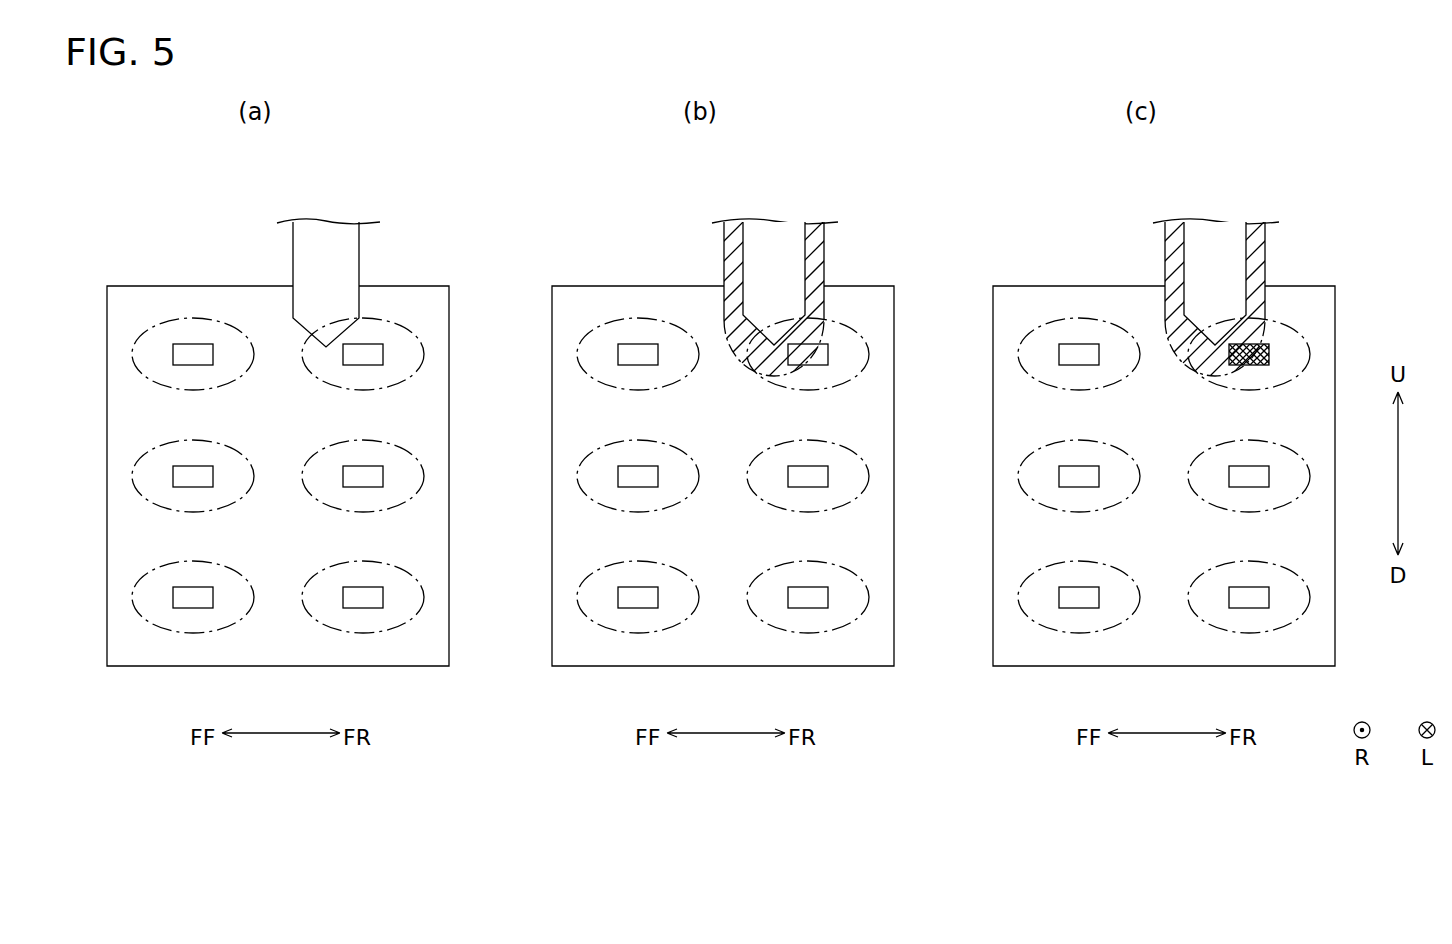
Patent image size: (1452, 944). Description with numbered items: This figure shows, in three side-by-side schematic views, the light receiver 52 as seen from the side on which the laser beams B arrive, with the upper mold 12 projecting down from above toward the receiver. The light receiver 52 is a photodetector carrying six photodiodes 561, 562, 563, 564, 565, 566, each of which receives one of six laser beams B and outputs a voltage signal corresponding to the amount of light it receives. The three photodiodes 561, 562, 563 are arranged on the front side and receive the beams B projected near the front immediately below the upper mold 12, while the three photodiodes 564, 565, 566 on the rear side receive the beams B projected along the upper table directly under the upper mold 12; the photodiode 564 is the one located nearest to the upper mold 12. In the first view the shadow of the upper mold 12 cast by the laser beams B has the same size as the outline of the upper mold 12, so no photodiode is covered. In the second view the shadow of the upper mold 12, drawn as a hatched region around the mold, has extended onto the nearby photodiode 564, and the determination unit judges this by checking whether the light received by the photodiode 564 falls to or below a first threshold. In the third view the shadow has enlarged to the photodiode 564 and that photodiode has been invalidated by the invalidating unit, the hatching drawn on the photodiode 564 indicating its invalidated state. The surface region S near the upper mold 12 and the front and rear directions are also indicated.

The light receiver 52 is at (180, 280).
The upper mold 12 is at (360, 232).
The contact surface S is at (361, 264).
The laser beam B is at (724, 463).
The photodiode 561 is at (638, 384).
The photodiode 562 is at (638, 505).
The photodiode 563 is at (638, 626).
The photodiode 564 is at (814, 384).
The photodiode 565 is at (809, 505).
The photodiode 566 is at (809, 626).